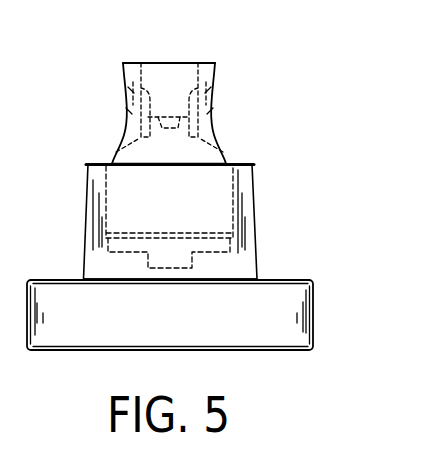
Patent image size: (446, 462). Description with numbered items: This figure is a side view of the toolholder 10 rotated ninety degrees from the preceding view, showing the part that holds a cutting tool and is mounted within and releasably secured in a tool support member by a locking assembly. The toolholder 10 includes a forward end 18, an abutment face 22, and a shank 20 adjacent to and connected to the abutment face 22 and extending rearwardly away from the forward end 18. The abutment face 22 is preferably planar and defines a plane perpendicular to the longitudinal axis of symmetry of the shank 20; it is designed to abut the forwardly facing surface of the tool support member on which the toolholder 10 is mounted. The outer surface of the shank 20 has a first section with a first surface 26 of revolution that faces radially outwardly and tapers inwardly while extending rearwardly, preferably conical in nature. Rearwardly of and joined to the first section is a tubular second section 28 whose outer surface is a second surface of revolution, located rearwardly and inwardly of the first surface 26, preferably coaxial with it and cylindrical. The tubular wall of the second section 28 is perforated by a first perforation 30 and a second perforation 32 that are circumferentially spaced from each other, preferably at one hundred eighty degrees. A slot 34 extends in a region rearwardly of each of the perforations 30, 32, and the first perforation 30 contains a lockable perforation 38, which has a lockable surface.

The toolholder 10 is at (283, 185).
The forward end 18 is at (314, 326).
The shank 20 is at (248, 182).
The abutment face 22 is at (285, 278).
The first surface of revolution 26 is at (255, 233).
The second section 28 is at (200, 85).
The first perforation 30 is at (218, 120).
The second perforation 32 is at (131, 132).
The slot 34 is at (213, 62).
The lockable perforation 38 is at (137, 91).